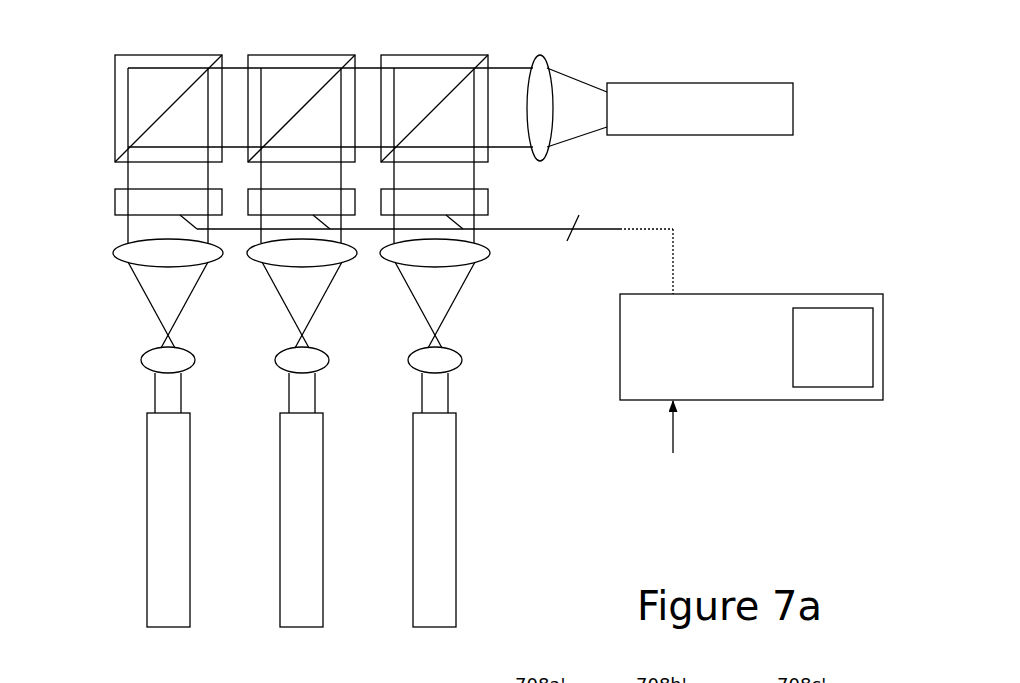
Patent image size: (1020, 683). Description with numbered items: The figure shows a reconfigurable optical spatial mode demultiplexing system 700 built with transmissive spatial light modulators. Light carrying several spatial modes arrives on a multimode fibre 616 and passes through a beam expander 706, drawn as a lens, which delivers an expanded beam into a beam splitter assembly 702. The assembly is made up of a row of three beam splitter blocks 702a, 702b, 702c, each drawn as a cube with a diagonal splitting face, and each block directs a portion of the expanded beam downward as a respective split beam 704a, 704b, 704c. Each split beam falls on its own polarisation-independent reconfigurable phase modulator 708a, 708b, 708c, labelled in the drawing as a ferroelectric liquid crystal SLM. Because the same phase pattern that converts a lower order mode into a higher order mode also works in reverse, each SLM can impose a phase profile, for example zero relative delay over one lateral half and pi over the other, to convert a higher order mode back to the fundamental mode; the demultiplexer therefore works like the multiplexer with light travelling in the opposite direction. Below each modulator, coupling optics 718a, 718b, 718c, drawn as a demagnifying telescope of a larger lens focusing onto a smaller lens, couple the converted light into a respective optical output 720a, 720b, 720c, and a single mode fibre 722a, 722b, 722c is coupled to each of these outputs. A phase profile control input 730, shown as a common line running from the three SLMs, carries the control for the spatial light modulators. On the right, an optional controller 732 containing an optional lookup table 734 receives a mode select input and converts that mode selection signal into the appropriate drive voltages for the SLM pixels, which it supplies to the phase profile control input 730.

The reconfigurable optical spatial mode demultiplexing system 700 is at (89, 633).
The beam splitter assembly 702 is at (98, 85).
The beam splitter block 702a is at (137, 55).
The beam splitter block 702b is at (290, 55).
The beam splitter block 702c is at (420, 55).
The split beam 704a is at (109, 155).
The split beam 704b is at (118, 174).
The split beam 704c is at (242, 155).
The beam expander 706 is at (546, 46).
The multimode fibre 616 is at (700, 83).
The polarisation-independent reconfigurable phase modulator 708a is at (114, 201).
The polarisation-independent reconfigurable phase modulator 708b is at (277, 188).
The polarisation-independent reconfigurable phase modulator 708c is at (488, 200).
The coupling optics 718a is at (114, 306).
The coupling optics 718b is at (343, 302).
The coupling optics 718c is at (490, 307).
The optical output 720a is at (197, 392).
The optical output 720b is at (333, 391).
The optical output 720c is at (464, 391).
The single mode fibre 722a is at (192, 525).
The single mode fibre 722b is at (325, 525).
The single mode fibre 722c is at (458, 525).
The phase profile control input 730 is at (550, 229).
The controller 732 is at (831, 308).
The lookup table 734 is at (858, 400).